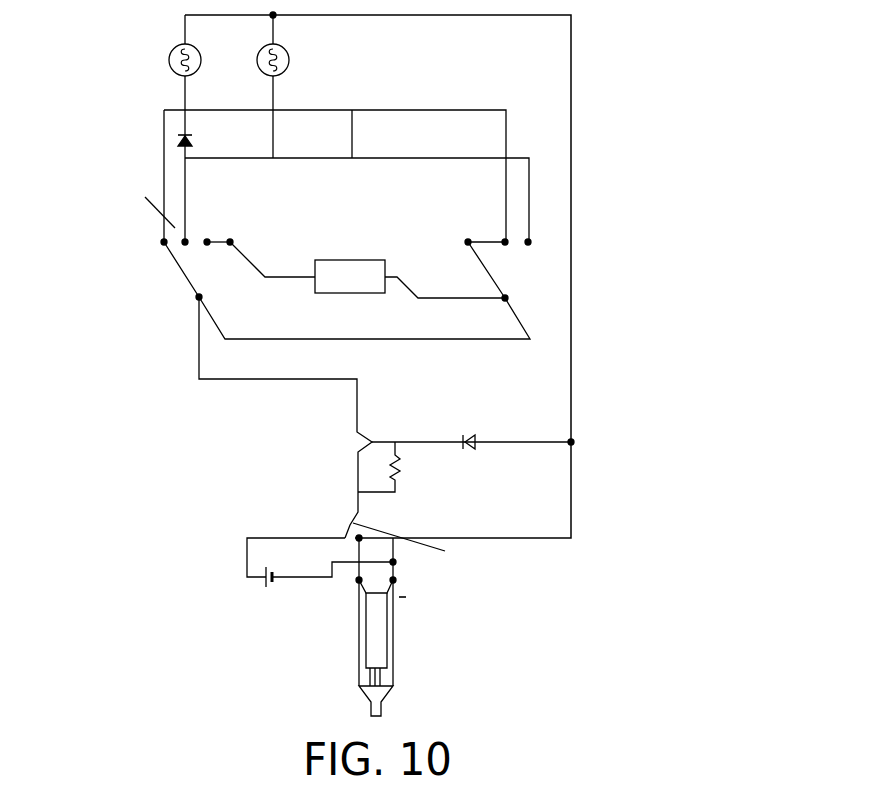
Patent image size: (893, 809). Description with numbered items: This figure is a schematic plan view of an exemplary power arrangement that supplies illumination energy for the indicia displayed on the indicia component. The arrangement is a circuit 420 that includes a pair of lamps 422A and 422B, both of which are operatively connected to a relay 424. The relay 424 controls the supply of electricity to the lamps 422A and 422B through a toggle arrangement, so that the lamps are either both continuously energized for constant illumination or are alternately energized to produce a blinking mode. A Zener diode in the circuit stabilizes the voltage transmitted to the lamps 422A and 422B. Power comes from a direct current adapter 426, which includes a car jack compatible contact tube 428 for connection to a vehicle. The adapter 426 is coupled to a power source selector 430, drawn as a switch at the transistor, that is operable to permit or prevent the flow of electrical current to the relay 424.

The circuit 420 is at (622, 272).
The lamp 422A is at (172, 77).
The lamp 422B is at (290, 72).
The relay 424 is at (318, 293).
The direct current (D.C.) adapter 426 is at (237, 550).
The car jack compatible contact tube 428 is at (395, 652).
The power source selector 430 is at (445, 551).